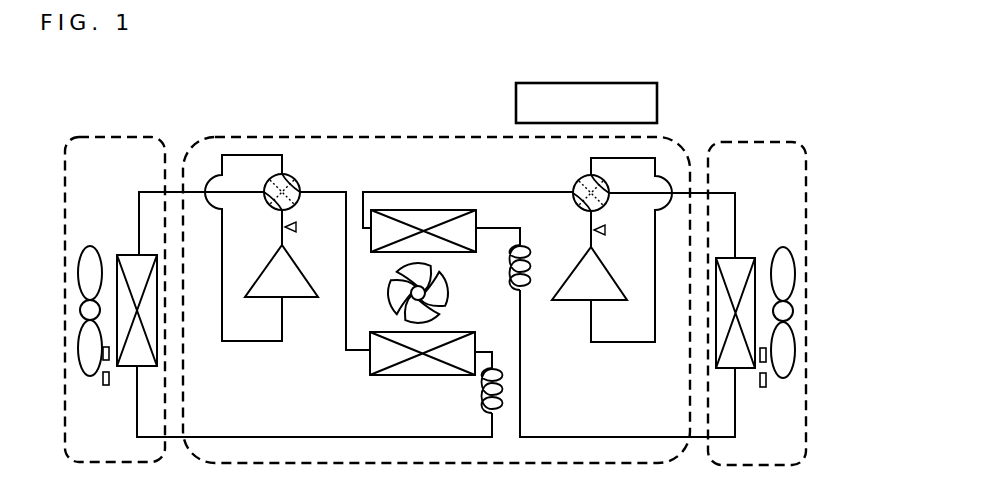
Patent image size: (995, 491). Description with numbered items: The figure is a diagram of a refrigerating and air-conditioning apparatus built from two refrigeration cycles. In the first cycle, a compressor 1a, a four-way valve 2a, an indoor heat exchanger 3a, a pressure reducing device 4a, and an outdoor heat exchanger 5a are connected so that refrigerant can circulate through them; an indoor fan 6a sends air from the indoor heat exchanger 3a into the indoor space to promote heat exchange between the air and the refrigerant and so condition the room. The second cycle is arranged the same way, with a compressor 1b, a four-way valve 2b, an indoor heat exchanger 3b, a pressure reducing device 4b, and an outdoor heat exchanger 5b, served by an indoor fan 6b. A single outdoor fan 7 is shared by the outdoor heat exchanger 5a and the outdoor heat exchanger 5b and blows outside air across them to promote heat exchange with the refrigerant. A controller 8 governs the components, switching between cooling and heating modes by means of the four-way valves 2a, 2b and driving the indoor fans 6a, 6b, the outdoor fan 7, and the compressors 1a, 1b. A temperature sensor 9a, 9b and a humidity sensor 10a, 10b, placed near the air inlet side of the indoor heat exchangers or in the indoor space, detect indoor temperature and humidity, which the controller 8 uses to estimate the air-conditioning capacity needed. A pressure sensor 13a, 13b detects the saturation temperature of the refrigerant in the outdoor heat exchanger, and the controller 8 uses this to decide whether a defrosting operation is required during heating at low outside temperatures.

The compressor 1a is at (273, 282).
The compressor 1b is at (590, 273).
The four-way valve 2a is at (296, 180).
The four-way valve 2b is at (578, 183).
The indoor heat exchanger 3a is at (137, 262).
The indoor heat exchanger 3b is at (740, 268).
The pressure reducing device 4a is at (484, 396).
The pressure reducing device 4b is at (528, 258).
The outdoor heat exchanger 5a is at (420, 376).
The outdoor heat exchanger 5b is at (420, 222).
The indoor fan 6a is at (80, 268).
The indoor fan 6b is at (788, 266).
The outdoor fan 7 is at (446, 287).
The controller 8 is at (646, 113).
The temperature sensor 9a is at (109, 360).
The temperature sensor 9b is at (766, 362).
The humidity sensor 10a is at (107, 385).
The humidity sensor 10b is at (764, 387).
The pressure sensor 13a is at (297, 228).
The pressure sensor 13b is at (605, 231).